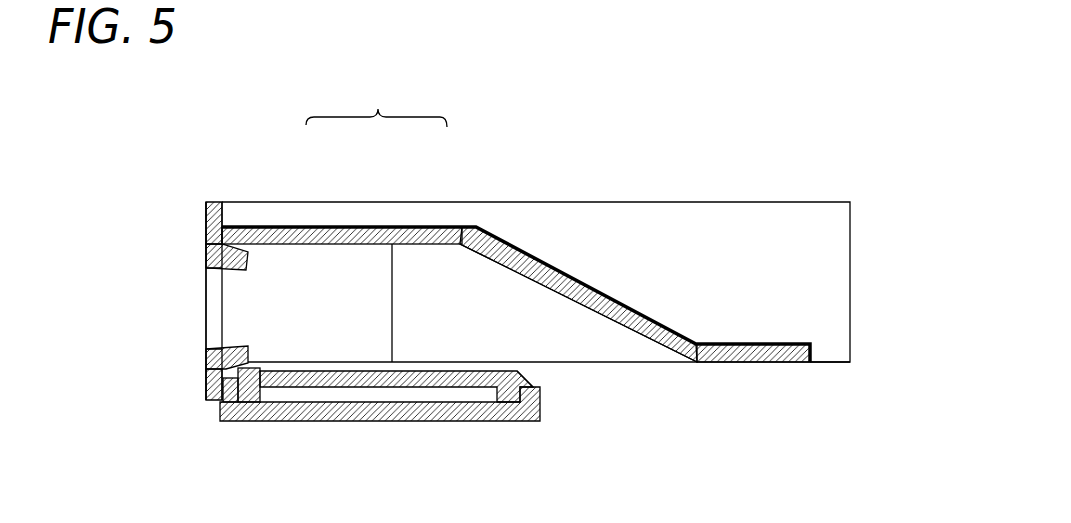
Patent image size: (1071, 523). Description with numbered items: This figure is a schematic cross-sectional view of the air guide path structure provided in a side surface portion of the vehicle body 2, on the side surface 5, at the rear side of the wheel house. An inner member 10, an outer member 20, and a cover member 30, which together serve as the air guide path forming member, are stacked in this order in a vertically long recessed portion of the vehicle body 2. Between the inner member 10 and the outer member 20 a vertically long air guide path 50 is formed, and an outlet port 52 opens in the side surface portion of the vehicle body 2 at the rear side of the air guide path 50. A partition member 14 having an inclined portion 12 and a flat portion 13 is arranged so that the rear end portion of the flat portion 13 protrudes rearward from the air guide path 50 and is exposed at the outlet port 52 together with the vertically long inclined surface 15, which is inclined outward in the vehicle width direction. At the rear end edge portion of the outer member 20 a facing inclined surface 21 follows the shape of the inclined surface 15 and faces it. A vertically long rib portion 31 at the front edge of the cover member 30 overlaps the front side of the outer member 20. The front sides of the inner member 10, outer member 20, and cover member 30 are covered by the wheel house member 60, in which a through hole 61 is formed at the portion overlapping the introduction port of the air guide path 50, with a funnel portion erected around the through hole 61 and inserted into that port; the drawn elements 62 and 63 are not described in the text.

The vehicle body 2 is at (725, 238).
The side surface 5 is at (828, 363).
The inner member 10 is at (607, 257).
The inclined portion 12 is at (328, 268).
The flat portion 13 is at (447, 267).
The partition member 14 is at (376, 95).
The vertically long inclined surface 15 is at (620, 323).
The outer member 20 is at (452, 380).
The facing inclined surface 21 is at (530, 383).
The cover member 30 is at (303, 423).
The vertically long rib portion 31 is at (237, 377).
The air guide path 50 is at (450, 282).
The outlet port 52 is at (655, 368).
The wheel house member 60 is at (205, 375).
The through hole 61 is at (210, 305).
The upper engaging tab 62 is at (245, 240).
The support block 63 is at (220, 390).